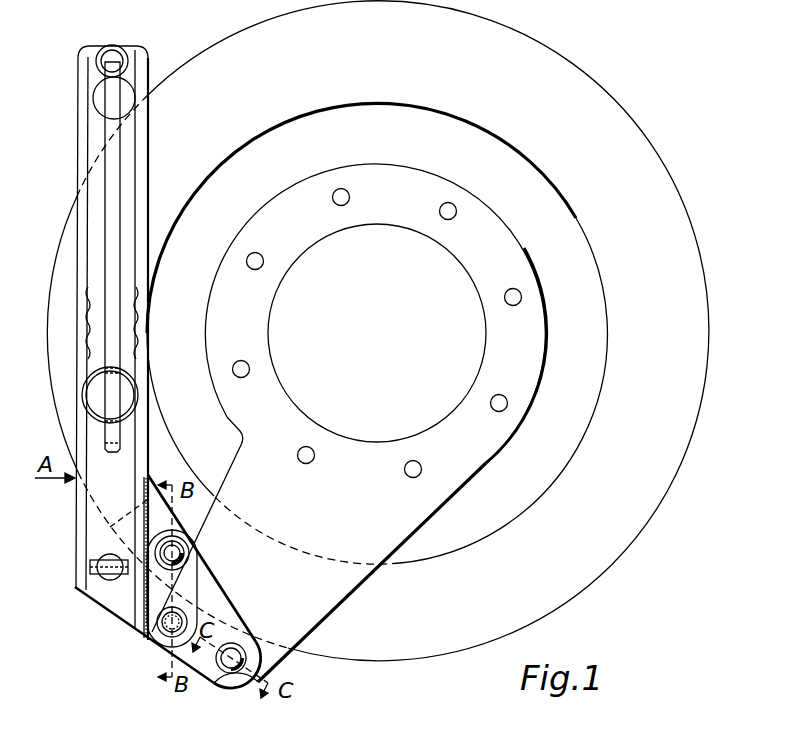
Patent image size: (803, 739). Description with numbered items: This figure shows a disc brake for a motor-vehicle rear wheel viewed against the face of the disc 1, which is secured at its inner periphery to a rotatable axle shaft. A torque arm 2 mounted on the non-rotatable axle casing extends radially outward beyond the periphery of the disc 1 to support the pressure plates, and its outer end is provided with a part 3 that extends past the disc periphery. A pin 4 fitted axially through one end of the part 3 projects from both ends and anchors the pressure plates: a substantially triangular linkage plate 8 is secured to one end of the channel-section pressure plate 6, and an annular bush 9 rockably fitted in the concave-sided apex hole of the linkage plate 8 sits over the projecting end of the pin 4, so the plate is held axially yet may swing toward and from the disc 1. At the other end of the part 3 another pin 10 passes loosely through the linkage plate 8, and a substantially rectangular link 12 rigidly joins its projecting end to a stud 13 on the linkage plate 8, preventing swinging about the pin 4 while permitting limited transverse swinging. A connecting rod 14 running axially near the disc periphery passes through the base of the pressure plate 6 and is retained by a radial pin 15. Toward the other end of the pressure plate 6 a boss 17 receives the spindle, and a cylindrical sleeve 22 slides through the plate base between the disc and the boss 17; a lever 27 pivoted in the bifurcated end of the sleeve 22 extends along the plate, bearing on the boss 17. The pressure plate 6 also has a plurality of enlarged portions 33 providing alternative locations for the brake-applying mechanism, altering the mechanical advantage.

The disc 1 is at (570, 585).
The torque arm 2 is at (333, 590).
The part 3 is at (255, 643).
The pin 4 is at (235, 673).
The pressure plate 6 is at (133, 133).
The linkage plate 8 is at (232, 623).
The annular bush 9 is at (226, 672).
The pin 10 is at (160, 631).
The link 12 is at (198, 581).
The stud 13 is at (184, 551).
The connecting rod 14 is at (100, 583).
The pin 15 is at (90, 566).
The boss 17 is at (109, 52).
The cylindrical sleeve 22 is at (120, 97).
The lever 27 is at (121, 192).
The enlarged portions 33 is at (137, 307).